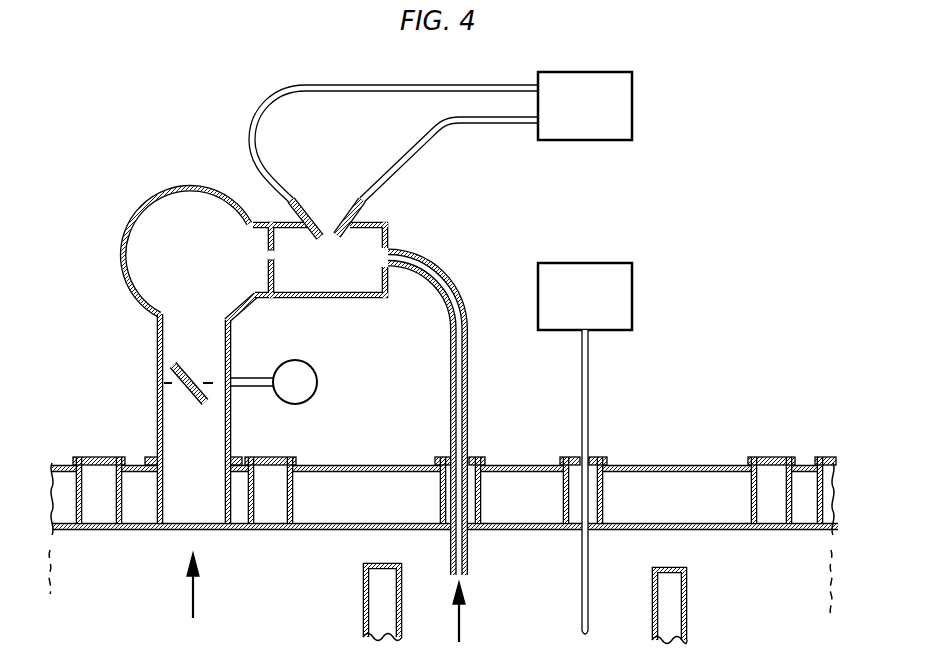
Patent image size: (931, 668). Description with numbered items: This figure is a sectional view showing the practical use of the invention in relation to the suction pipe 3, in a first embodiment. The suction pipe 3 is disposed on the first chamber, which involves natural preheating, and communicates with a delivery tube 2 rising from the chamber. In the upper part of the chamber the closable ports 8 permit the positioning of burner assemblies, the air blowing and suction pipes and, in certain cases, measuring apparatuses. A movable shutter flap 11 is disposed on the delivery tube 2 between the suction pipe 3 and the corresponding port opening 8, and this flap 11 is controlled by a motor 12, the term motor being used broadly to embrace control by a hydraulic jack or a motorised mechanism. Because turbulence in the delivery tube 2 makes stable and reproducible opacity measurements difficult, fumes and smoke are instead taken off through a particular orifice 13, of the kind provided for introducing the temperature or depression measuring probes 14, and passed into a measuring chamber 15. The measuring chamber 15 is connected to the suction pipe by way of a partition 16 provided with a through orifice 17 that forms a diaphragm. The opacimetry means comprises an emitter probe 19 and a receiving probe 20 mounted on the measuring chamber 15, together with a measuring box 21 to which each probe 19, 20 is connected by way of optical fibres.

The delivery tube 2 is at (157, 428).
The suction pipe 3 is at (125, 238).
The closable port 8 is at (278, 457).
The movable shutter flap 11 is at (170, 372).
The motor 12 is at (317, 384).
The orifice 13 is at (471, 460).
The measuring probe 14 is at (582, 390).
The measuring chamber 15 is at (365, 298).
The partition 16 is at (277, 273).
The through orifice 17 is at (279, 258).
The emitter probe 19 is at (366, 207).
The receiving probe 20 is at (298, 208).
The measuring box 21 is at (628, 100).